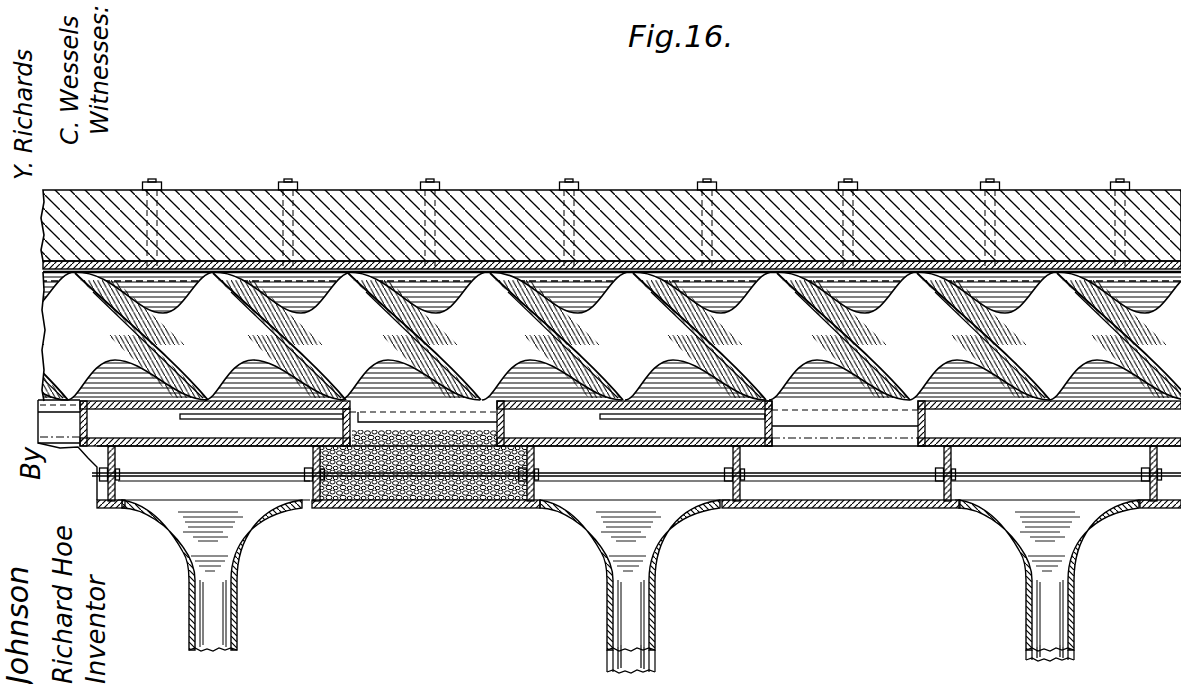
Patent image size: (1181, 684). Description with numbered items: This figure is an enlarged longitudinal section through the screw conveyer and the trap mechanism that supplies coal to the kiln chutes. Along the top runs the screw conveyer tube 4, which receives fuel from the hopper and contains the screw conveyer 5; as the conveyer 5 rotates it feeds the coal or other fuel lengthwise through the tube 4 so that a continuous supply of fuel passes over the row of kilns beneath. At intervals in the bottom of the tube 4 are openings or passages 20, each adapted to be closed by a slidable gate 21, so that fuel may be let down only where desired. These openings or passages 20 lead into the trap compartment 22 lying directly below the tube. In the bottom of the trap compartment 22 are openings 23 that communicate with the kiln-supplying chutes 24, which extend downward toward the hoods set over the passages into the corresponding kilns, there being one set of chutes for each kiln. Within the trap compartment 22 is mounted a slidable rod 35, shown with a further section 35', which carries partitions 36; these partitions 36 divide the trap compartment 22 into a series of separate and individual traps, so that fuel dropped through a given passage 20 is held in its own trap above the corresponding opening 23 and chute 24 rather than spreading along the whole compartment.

The screw conveyer tube 4 is at (44, 273).
The screw conveyer 5 is at (590, 336).
The openings or passages 20 is at (44, 400).
The slidable gates 21 is at (630, 423).
The trap compartment 22 is at (830, 510).
The openings 23 is at (192, 499).
The kiln-supplying chute 24 is at (241, 555).
The slidable rod 35 is at (636, 476).
The slidable rod 35' is at (842, 491).
The partitions 36 is at (728, 458).